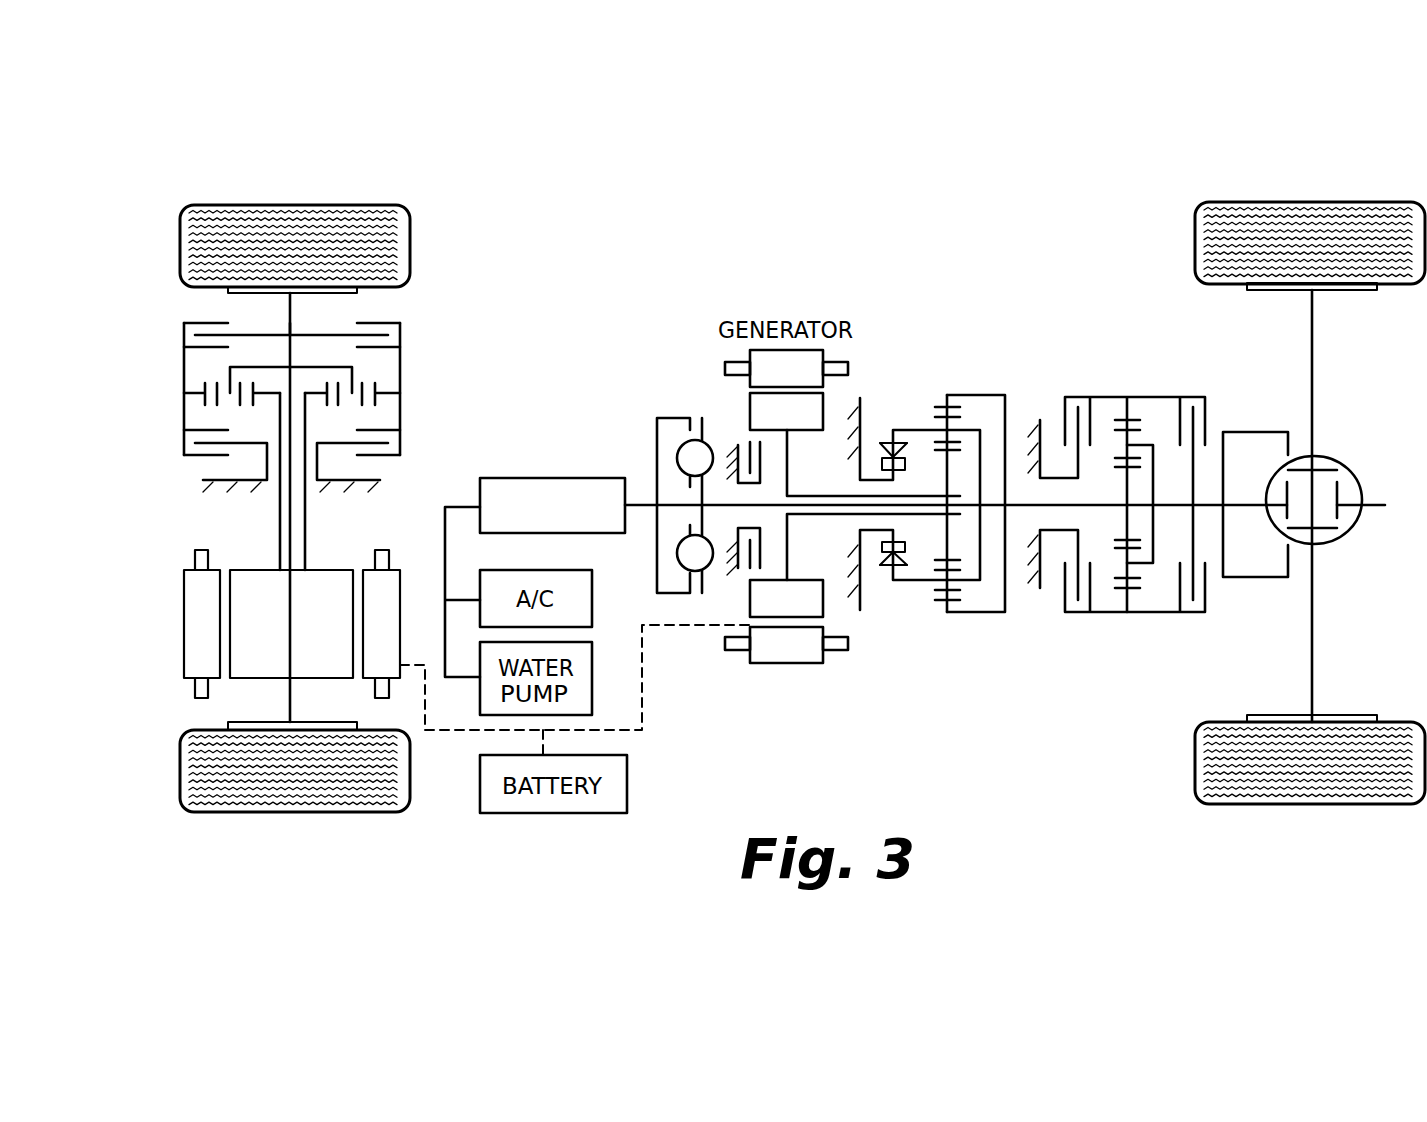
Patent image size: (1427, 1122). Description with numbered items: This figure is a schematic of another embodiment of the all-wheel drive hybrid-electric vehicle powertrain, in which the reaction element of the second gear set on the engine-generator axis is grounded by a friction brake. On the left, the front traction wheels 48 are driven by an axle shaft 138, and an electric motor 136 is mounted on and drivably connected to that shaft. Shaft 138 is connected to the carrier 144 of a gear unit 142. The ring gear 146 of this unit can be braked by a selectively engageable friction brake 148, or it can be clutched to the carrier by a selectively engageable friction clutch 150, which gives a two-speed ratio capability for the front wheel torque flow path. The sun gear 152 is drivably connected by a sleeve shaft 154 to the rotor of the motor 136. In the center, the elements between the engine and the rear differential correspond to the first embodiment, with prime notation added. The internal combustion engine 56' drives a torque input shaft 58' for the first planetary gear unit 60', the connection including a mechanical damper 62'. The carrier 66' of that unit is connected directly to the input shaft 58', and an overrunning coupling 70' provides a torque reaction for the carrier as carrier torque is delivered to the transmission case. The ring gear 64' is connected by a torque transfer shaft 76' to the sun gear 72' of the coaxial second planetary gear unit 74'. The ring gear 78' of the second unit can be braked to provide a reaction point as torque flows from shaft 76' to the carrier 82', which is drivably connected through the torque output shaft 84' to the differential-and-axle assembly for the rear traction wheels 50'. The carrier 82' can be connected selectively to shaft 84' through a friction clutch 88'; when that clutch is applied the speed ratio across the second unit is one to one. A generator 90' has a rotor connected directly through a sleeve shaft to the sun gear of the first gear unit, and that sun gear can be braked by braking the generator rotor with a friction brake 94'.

The front traction wheels 48 is at (297, 205).
The rear traction wheels 50' is at (1310, 505).
The internal combustion engine 56' is at (552, 474).
The torque input shaft 58' is at (976, 534).
The first planetary gear unit 60' is at (1099, 535).
The mechanical damper 62' is at (682, 469).
The ring gear 64' is at (964, 470).
The planetary carrier 66' is at (914, 469).
The overrunning coupling 70' is at (892, 609).
The sun gear 72' is at (1205, 531).
The second planetary gear unit 74' is at (1151, 618).
The torque transfer shaft 76' is at (1047, 464).
The ring gear 78' is at (1117, 458).
The carrier 82' is at (1146, 438).
The torque output shaft 84' is at (1247, 469).
The friction clutch 88' is at (1207, 464).
The generator 90' is at (795, 648).
The friction brake 94' is at (721, 616).
The motor 136 is at (247, 653).
The axle shaft 138 is at (290, 698).
The gear unit 142 is at (410, 375).
The carrier 144 is at (330, 365).
The ring gear 146 is at (377, 397).
The friction brake 148 is at (380, 458).
The friction clutch 150 is at (196, 334).
The sun gear 152 is at (237, 400).
The sleeve shaft 154 is at (280, 533).